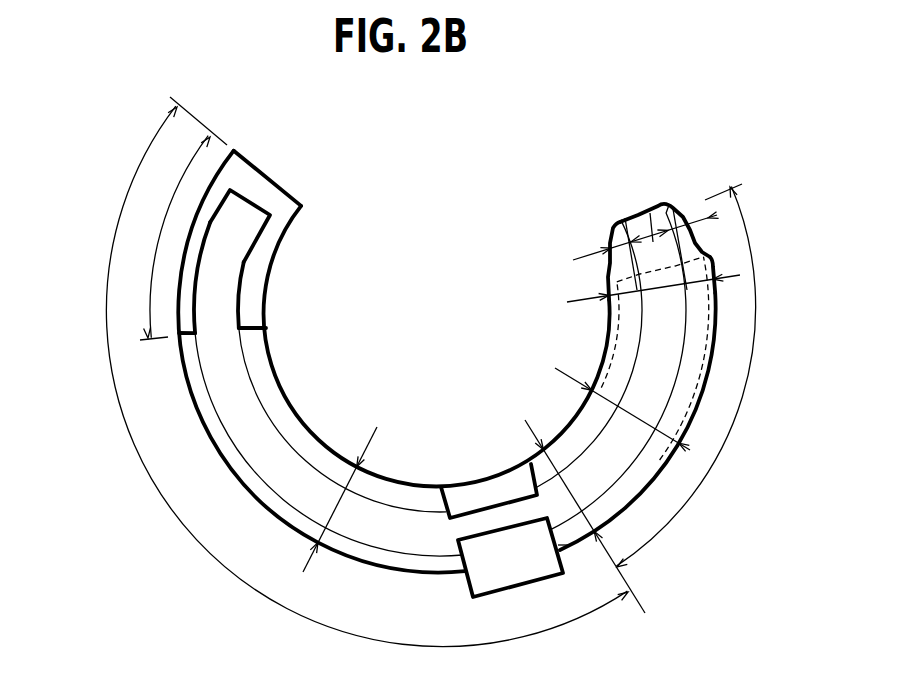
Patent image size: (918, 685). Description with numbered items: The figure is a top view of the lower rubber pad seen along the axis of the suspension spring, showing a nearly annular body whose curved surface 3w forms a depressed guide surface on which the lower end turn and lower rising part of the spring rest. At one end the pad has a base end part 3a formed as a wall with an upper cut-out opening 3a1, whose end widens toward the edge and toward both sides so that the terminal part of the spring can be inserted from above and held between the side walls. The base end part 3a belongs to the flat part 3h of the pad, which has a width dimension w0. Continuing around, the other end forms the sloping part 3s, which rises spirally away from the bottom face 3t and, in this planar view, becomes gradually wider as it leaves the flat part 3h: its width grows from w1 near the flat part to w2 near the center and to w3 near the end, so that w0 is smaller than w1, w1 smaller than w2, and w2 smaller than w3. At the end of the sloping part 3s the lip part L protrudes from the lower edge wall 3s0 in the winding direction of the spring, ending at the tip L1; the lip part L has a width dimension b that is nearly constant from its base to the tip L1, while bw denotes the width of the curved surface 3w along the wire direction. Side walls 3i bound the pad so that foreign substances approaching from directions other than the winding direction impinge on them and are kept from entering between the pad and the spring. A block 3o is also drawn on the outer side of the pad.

The upper cut-out opening 3a1 is at (257, 237).
The base end part 3a is at (177, 218).
The curved surface 3w is at (257, 432).
The flat part 3h is at (367, 376).
The outer projection block 3o is at (508, 578).
The side walls 3i is at (627, 263).
The sloping part 3s is at (694, 375).
The lower edge wall 3s0 is at (704, 257).
The bottom face 3t is at (558, 545).
The width dimension of the flat part w0 is at (340, 492).
The width dimension near the flat part of the sloping part w1 is at (564, 516).
The width dimension near the center of the sloping part w2 is at (622, 399).
The width dimension near the end of the sloping part w3 is at (651, 302).
The width dimension of the lip part b is at (644, 237).
The width dimension of the curved surface bw is at (682, 241).
The lip part L is at (642, 231).
The tip L1 is at (650, 213).